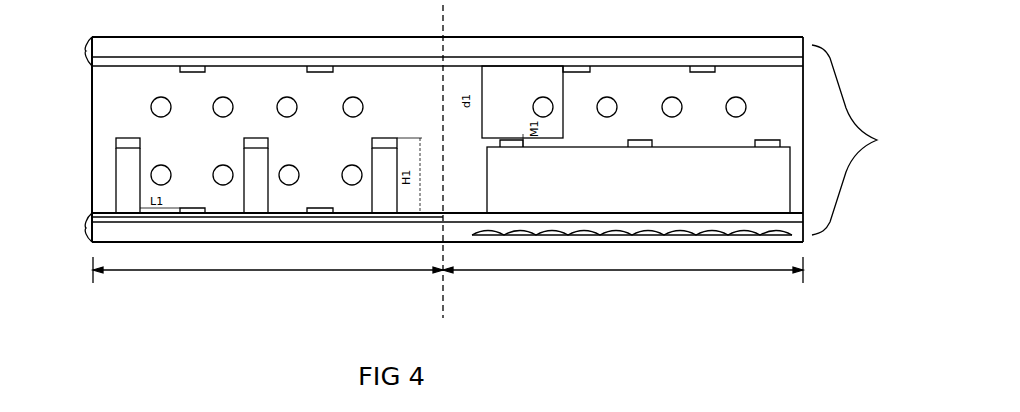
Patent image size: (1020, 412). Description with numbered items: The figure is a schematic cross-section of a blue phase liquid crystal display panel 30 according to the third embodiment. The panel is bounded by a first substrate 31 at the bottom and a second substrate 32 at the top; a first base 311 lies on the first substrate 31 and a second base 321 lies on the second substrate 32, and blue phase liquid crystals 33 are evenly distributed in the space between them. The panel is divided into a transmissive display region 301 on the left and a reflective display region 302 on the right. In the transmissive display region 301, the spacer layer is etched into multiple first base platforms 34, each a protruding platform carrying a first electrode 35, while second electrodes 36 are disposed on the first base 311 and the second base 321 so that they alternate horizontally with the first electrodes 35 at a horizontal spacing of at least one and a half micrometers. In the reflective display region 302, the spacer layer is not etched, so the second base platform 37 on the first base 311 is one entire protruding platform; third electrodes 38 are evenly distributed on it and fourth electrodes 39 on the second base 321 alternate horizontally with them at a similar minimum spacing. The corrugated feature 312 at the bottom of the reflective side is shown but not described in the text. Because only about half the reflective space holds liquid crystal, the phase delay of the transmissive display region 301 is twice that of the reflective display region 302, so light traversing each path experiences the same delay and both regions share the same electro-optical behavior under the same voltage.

The blue phase liquid crystal display panel 30 is at (877, 140).
The first substrate 31 is at (86, 228).
The first base 311 is at (100, 218).
The corrugated strip 312 is at (484, 233).
The second substrate 32 is at (87, 51).
The second base 321 is at (108, 62).
The blue phase liquid crystals 33 is at (160, 106).
The first base platforms 34 is at (255, 197).
The first electrodes 35 is at (257, 145).
The second electrodes 36 is at (321, 213).
The second base platform 37 is at (524, 188).
The third electrodes 38 is at (641, 147).
The fourth electrodes 39 is at (704, 72).
The transmissive display region 301 is at (268, 261).
The reflective display region 302 is at (623, 261).